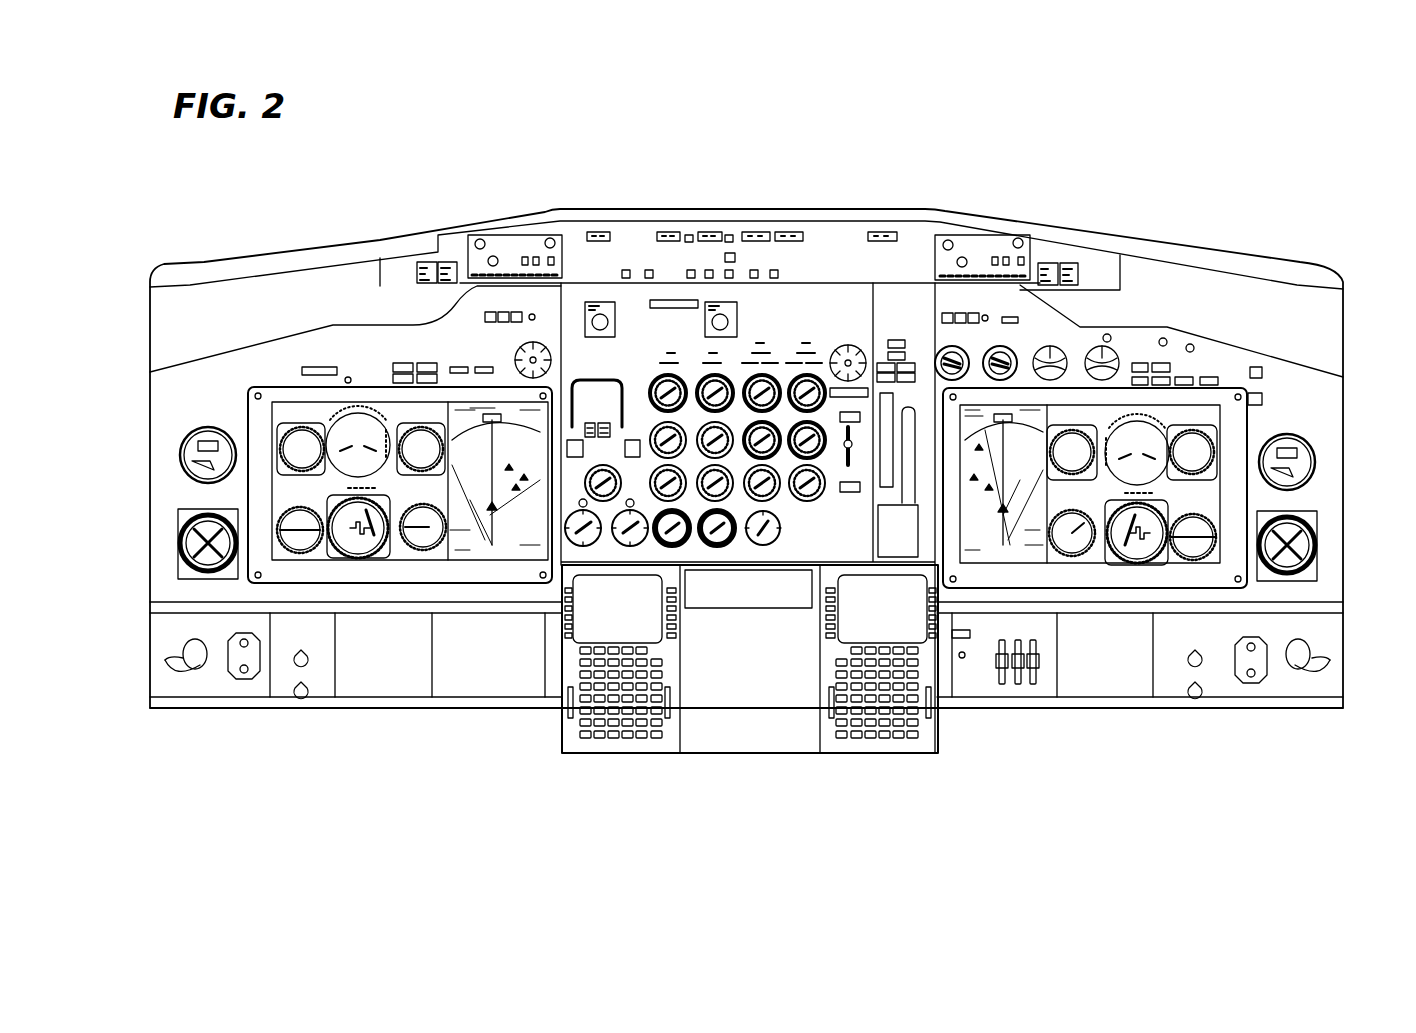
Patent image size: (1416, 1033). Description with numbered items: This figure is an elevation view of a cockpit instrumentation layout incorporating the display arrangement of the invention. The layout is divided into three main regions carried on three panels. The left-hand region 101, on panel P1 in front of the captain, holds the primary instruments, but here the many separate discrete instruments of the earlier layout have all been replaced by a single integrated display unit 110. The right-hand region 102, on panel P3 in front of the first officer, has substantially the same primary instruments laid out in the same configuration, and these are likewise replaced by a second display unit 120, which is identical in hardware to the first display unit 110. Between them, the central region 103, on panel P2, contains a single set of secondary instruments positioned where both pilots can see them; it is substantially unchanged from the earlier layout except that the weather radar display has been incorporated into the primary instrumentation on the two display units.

The left-hand region 101 is at (333, 283).
The right-hand region 102 is at (1177, 307).
The central region 103 is at (823, 318).
The integrated display unit 110 is at (290, 384).
The second display unit 120 is at (1017, 390).
The panel P1 is at (162, 386).
The panel P2 is at (632, 300).
The panel P3 is at (1300, 378).